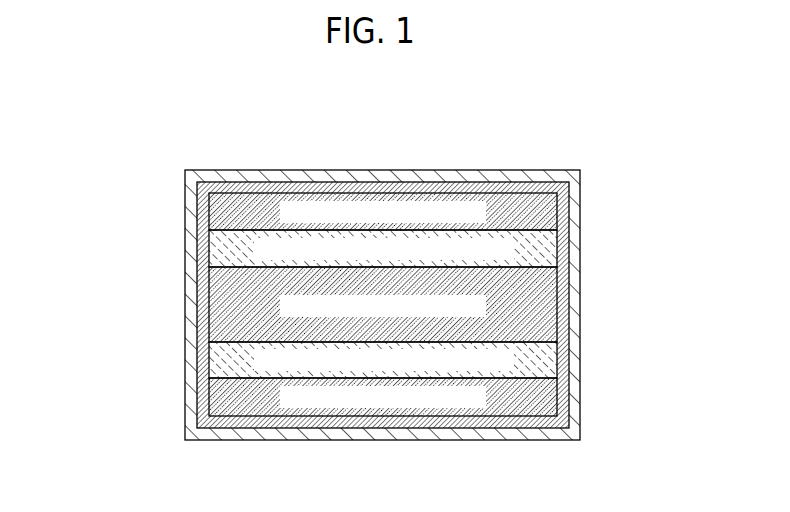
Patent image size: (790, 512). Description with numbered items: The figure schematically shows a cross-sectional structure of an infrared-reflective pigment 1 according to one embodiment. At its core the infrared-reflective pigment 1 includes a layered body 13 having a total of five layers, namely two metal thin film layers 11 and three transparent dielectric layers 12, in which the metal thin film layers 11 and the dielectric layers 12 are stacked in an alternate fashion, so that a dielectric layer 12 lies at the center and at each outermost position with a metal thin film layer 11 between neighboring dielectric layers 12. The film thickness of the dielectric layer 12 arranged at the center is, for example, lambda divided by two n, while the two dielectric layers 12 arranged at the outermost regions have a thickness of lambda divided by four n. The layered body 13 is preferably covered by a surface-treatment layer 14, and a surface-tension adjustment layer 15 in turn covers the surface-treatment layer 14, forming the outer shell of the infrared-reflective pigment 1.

The infrared-reflective pigment 1 is at (547, 112).
The metal thin film layer 11 is at (548, 248).
The dielectric layer 12 is at (548, 210).
The layered body 13 is at (443, 304).
The surface-treatment layer 14 is at (335, 190).
The surface-tension adjustment layer 15 is at (262, 170).